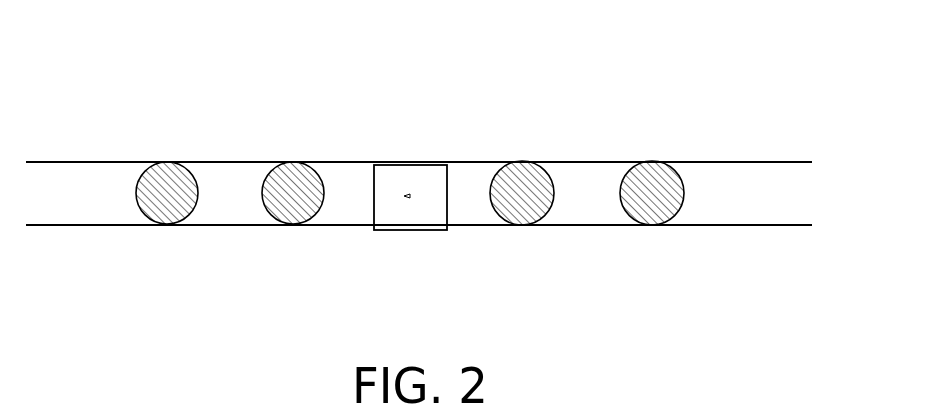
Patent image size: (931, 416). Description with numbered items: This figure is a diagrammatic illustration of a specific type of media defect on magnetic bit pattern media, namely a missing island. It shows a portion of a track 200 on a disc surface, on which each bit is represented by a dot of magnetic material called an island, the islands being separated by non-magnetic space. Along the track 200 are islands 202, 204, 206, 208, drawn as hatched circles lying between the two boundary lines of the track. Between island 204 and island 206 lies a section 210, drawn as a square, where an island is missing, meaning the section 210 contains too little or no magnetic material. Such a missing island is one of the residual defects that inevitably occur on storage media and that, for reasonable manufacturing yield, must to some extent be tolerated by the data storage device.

The track 200 is at (404, 101).
The island 202 is at (163, 160).
The island 204 is at (292, 160).
The island 206 is at (523, 160).
The island 208 is at (647, 160).
The section 210 is at (410, 230).